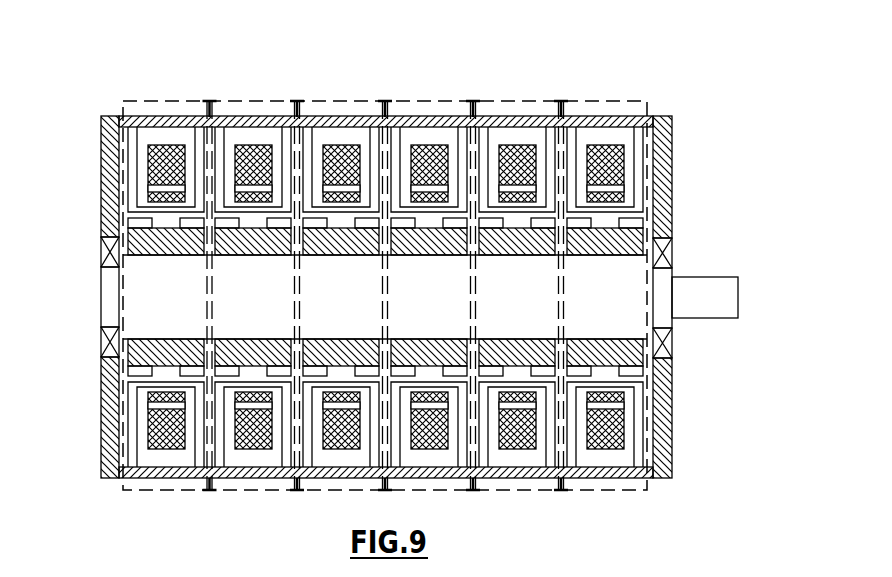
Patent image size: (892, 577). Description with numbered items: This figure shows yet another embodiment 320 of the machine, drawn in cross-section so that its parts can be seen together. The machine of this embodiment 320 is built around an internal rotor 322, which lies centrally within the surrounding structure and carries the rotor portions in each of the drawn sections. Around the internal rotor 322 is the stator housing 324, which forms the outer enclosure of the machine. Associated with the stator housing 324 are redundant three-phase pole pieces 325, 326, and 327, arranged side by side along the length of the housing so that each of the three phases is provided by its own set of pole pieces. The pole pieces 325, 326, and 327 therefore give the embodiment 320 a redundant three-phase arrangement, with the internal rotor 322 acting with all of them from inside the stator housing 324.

The embodiment 320 is at (757, 193).
The internal rotor 322 is at (622, 242).
The stator housing 324 is at (112, 127).
The three-phase pole piece 325 is at (232, 117).
The three-phase pole piece 326 is at (407, 117).
The three-phase pole piece 327 is at (586, 117).